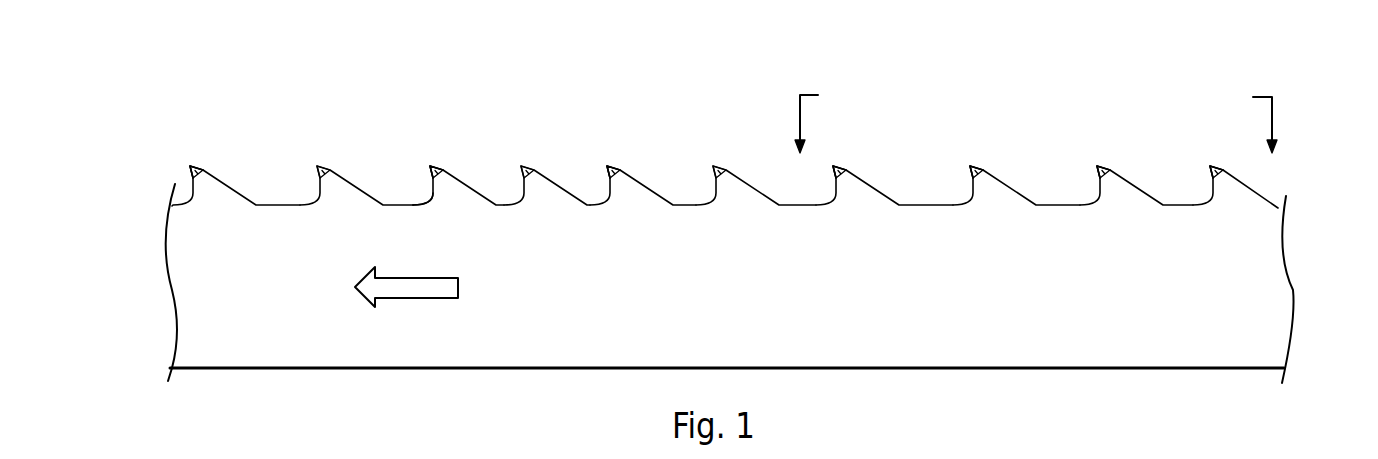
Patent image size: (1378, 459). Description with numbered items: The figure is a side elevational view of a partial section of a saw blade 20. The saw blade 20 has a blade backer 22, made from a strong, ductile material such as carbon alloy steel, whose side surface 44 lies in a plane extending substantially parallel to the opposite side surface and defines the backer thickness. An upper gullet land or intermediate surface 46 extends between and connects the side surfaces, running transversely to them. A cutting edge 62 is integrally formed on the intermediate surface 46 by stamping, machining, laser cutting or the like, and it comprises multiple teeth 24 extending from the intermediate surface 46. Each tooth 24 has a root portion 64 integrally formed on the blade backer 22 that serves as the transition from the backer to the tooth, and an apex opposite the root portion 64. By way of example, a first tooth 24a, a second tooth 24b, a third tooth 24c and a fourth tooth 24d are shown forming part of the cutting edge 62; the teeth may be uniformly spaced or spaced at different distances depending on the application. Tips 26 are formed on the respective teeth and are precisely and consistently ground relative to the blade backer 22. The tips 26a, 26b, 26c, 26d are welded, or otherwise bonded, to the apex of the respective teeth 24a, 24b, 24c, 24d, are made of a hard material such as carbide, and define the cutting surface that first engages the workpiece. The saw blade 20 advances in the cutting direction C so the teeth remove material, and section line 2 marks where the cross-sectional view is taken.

The saw blade 20 is at (701, 237).
The blade backer 22 is at (1043, 342).
The teeth 24 is at (450, 190).
The first tooth 24a is at (863, 198).
The second tooth 24b is at (985, 195).
The third tooth 24c is at (1113, 195).
The fourth tooth 24d is at (1253, 202).
The tips 26 is at (430, 167).
The tip 26a is at (832, 168).
The tip 26b is at (971, 167).
The tip 26c is at (1097, 167).
The tip 26d is at (1207, 168).
The side surface 44 is at (267, 330).
The intermediate surface 46 is at (413, 203).
The cutting edge 62 is at (173, 179).
The root portion 64 is at (217, 202).
The section line 2 is at (1036, 119).
The cutting direction C is at (433, 298).